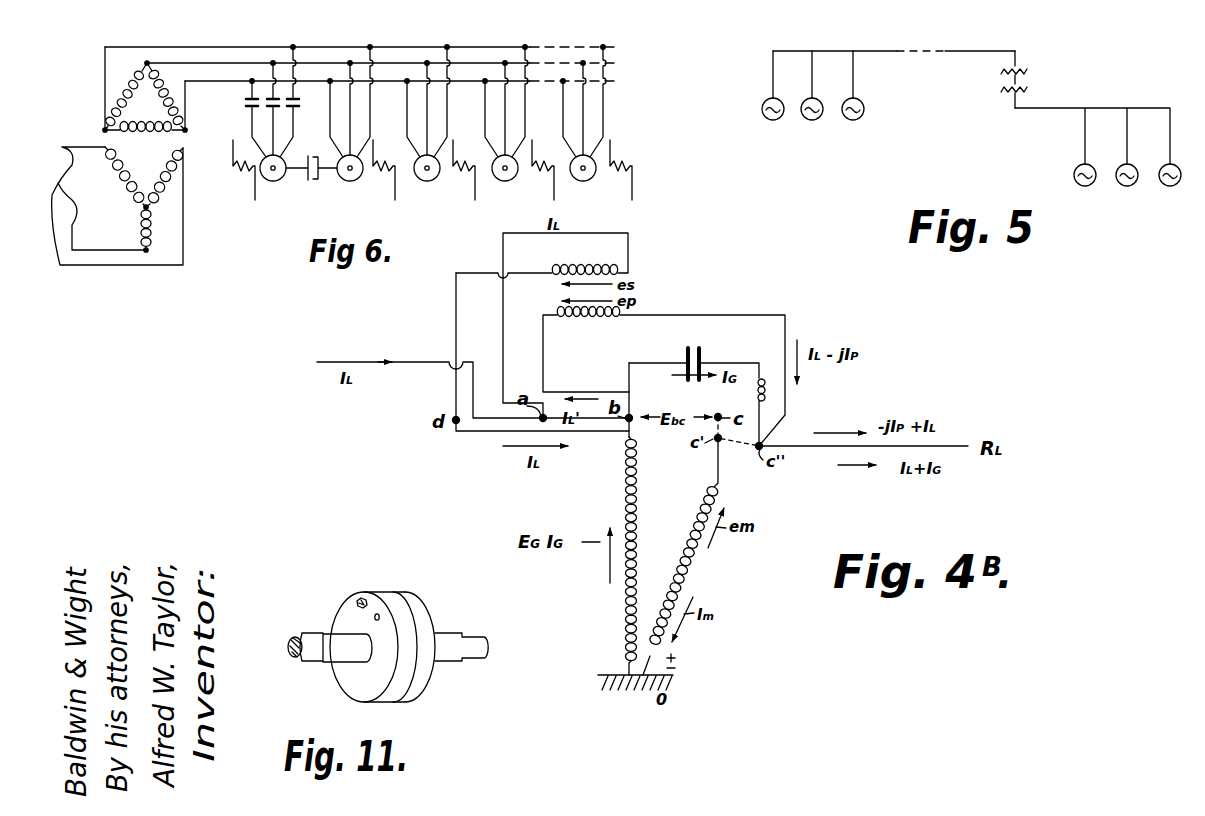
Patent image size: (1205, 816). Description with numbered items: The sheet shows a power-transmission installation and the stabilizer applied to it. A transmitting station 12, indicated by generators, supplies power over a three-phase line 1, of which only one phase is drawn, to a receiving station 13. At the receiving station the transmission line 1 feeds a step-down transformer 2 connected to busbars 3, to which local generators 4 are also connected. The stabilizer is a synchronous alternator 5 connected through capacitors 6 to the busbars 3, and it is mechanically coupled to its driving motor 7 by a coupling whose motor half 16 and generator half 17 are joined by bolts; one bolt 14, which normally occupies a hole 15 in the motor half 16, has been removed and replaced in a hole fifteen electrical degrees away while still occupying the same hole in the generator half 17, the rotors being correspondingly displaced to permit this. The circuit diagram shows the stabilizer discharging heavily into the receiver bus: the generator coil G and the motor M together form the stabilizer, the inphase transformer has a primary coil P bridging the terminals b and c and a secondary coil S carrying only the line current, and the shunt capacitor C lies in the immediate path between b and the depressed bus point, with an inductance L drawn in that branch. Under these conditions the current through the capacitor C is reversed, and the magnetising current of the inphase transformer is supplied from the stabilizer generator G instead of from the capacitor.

In FIG. 6, the three phase transmission line 1 is at (58, 188).
In FIG. 5, the three phase transmission line 1 is at (895, 50).
In FIG. 6, the step-down transformer 2 is at (135, 192).
In FIG. 5, the step-down transformer 2 is at (995, 81).
In FIG. 6, the busbars 3 is at (216, 80).
In FIG. 6, the local generators 4 is at (433, 182).
In FIG. 6, the synchronous alternator 5 is at (288, 160).
In FIG. 6, the capacitors 6 is at (291, 90).
In FIG. 6, the motor coupled to motor 5 7 is at (352, 181).
In FIG. 5, the transmitting station 12 is at (830, 120).
In FIG. 5, the receiving station 13 is at (1102, 184).
In FIG. 11, the coupling bolt 14 is at (357, 601).
In FIG. 11, the hole 15 is at (380, 615).
In FIG. 6, the motor half of the coupling 16 is at (324, 177).
In FIG. 11, the motor half of the coupling 16 is at (384, 600).
In FIG. 6, the generator half of the coupling 17 is at (300, 178).
In FIG. 11, the generator half of the coupling 17 is at (417, 683).
In FIG. 4B, the secondary coil of the inphase transformer S is at (537, 257).
In FIG. 4B, the primary coil of the inphase transformer P is at (664, 377).
In FIG. 4B, the capacitor C is at (707, 354).
In FIG. 4B, the inductance L is at (754, 395).
In FIG. 4B, the generator coil of stabilisor G is at (615, 606).
In FIG. 4B, the motor of stabilisor M is at (682, 564).